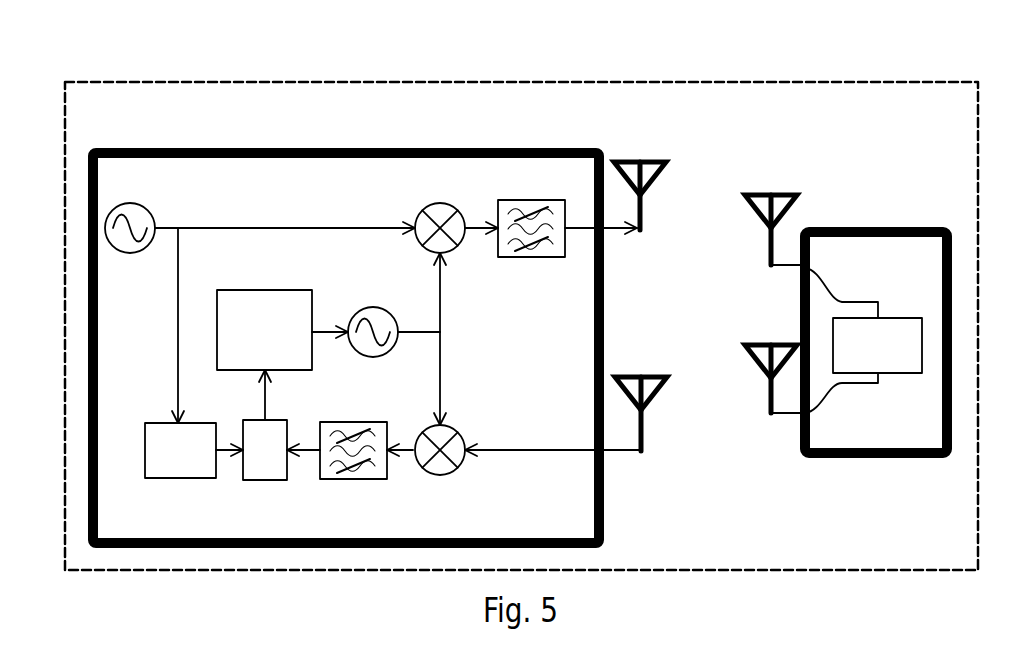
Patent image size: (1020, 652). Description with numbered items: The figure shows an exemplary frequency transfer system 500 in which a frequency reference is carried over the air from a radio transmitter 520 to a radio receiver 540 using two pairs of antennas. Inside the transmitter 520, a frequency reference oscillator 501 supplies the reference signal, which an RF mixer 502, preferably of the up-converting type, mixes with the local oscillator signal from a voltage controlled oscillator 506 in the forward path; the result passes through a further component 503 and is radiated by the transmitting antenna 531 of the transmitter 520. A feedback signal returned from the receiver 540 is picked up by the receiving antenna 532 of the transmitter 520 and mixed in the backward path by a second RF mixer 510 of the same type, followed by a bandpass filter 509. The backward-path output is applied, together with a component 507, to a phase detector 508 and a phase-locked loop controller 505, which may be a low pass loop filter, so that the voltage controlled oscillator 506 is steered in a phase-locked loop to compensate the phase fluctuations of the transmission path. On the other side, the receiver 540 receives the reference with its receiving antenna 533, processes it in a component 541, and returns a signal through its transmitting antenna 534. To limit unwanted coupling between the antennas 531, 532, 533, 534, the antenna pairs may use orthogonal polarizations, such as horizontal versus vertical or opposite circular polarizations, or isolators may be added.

The frequency transfer system 500 is at (688, 82).
The radio transmitter 520 is at (346, 322).
The frequency reference oscillator 501 is at (116, 248).
The RF mixer 502 is at (438, 202).
The transmitter component 503 is at (535, 200).
The phase-locked loop controller 505 is at (268, 290).
The voltage controlled oscillator 506 is at (380, 307).
The transmitter component 507 is at (187, 478).
The phase detector 508 is at (278, 480).
The bandpass filter 509 is at (370, 479).
The RF mixer 510 is at (453, 473).
The transmitting antenna of the transmitter 531 is at (653, 160).
The receiving antenna of the transmitter 532 is at (653, 376).
The receiving antenna of the receiver 533 is at (780, 194).
The transmitting antenna of the receiver 534 is at (782, 344).
The radio receiver 540 is at (912, 458).
The receiver component 541 is at (888, 317).